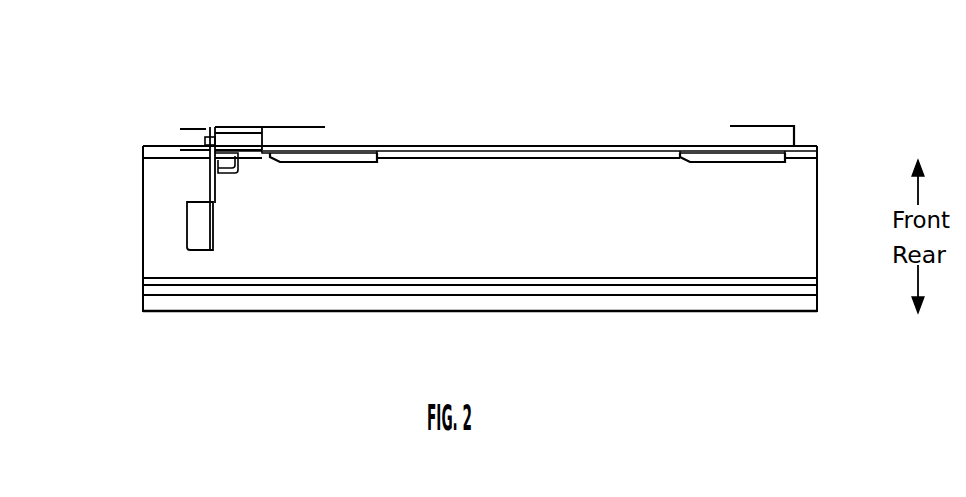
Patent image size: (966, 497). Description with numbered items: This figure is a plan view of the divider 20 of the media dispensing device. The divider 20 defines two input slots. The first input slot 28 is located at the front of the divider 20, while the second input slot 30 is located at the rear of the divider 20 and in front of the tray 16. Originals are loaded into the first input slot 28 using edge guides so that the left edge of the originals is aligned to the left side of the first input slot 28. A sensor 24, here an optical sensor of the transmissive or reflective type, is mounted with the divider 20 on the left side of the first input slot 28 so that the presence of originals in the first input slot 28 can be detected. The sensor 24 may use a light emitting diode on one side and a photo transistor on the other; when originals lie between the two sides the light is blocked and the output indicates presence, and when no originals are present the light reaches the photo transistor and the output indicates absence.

The tray 16 is at (143, 296).
The divider 20 is at (147, 149).
The sensor 24 is at (193, 113).
The first input slot 28 is at (503, 103).
The second input slot 30 is at (600, 220).